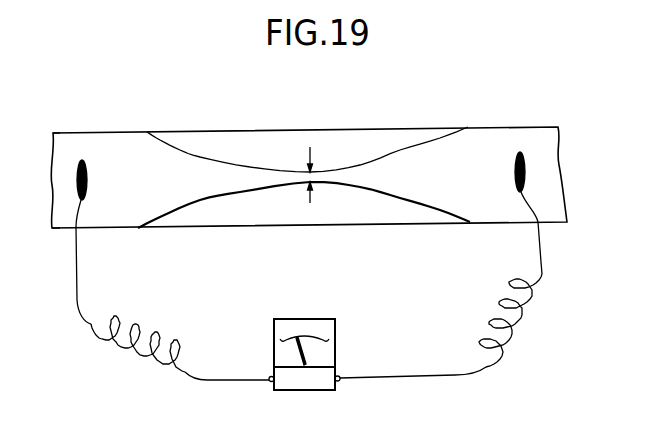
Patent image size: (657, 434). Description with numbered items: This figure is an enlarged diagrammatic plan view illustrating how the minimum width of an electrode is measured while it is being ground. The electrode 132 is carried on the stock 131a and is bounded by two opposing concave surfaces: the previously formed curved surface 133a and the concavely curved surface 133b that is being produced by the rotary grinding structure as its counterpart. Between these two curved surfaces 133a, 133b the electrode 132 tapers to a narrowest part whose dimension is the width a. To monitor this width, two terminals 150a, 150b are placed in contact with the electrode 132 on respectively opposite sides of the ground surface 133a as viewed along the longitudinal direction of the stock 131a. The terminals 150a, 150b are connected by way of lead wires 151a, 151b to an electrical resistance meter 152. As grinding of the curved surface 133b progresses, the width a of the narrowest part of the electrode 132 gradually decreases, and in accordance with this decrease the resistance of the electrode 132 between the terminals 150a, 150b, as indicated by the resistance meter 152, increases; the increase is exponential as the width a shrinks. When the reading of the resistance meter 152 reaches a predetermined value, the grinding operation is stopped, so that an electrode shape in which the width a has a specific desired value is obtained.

The stock 131a is at (63, 132).
The electrode 132 is at (490, 129).
The curved surface 133a is at (373, 131).
The concavely curved surface 133b is at (388, 217).
The terminal 150a is at (85, 162).
The terminal 150b is at (526, 161).
The lead wire 151a is at (125, 353).
The lead wire 151b is at (540, 305).
The electrical resistance meter 152 is at (337, 347).
The width a is at (317, 171).